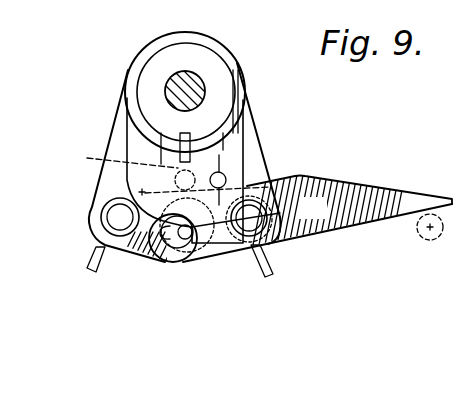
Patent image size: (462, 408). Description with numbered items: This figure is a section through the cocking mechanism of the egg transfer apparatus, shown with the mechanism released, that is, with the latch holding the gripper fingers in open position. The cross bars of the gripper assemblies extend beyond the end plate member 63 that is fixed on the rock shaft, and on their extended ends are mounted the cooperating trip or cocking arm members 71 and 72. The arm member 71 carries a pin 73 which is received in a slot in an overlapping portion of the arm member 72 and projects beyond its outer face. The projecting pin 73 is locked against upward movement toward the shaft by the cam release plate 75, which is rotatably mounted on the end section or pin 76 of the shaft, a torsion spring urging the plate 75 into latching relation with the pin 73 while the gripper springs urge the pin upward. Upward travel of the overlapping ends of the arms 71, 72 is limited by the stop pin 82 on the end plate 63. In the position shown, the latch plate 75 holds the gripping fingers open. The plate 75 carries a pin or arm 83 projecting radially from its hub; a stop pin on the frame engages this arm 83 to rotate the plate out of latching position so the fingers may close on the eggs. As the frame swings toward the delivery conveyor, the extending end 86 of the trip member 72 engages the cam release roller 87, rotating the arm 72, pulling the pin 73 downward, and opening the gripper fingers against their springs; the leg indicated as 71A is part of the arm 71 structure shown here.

The end plate member 63 is at (112, 135).
The stop pin 82 is at (164, 174).
The trip or cocking arm member 71 is at (100, 220).
The lever leg 71A is at (105, 250).
The pin 73 is at (349, 210).
The trip or cocking arm member 72 is at (312, 236).
The extending end 86 is at (378, 222).
The cam release roller 87 is at (429, 240).
The cam release plate 75 is at (232, 133).
The end section or pin 76 is at (207, 90).
The pin or arm 83 is at (228, 153).